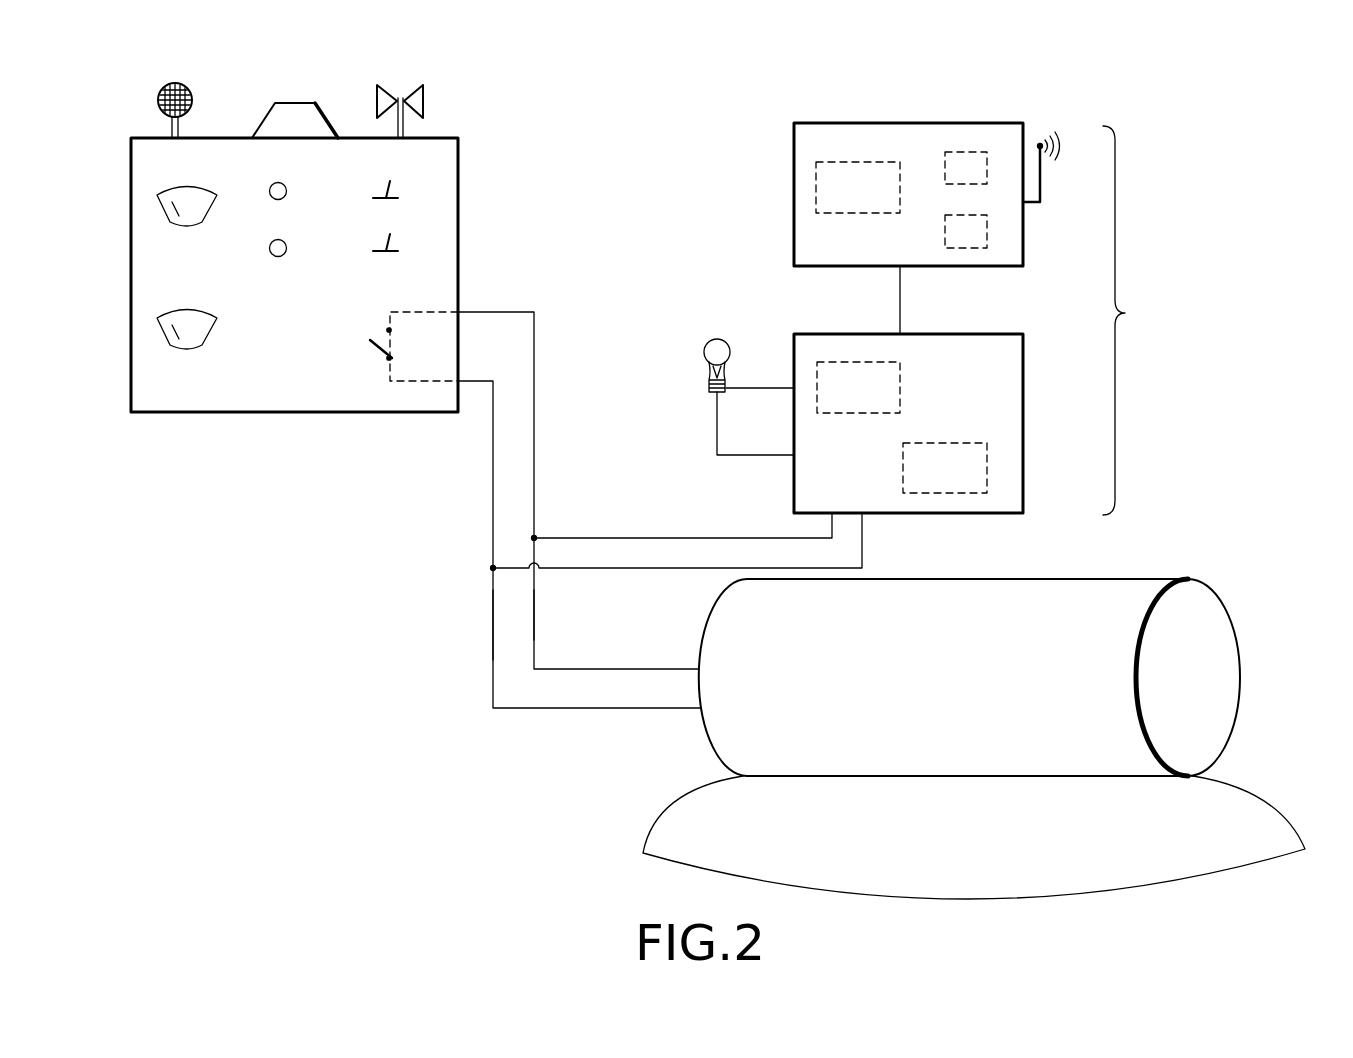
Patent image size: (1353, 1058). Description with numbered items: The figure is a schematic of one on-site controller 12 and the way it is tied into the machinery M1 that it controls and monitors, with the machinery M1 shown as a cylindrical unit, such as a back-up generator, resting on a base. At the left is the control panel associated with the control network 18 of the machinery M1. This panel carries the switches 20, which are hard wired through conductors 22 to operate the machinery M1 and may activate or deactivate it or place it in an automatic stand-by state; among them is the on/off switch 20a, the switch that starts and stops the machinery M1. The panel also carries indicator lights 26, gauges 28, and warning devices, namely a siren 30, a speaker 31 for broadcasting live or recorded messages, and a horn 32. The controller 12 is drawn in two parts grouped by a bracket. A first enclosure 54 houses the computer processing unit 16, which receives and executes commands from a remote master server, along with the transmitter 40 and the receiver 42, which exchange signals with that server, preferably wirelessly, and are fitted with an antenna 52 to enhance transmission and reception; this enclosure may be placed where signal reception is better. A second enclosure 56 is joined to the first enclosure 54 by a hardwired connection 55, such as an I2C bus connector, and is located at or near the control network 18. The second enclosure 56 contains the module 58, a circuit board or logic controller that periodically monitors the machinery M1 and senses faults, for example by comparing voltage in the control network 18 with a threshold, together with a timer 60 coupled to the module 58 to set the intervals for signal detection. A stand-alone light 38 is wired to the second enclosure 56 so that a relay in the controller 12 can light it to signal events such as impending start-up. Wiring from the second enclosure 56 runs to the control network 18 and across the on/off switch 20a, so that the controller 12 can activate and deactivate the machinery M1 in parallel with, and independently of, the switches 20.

The controller 12 is at (1139, 320).
The computer processing unit 16 is at (817, 177).
The control network 18 is at (491, 544).
The switches 20 is at (391, 191).
The on/off switch 20a is at (372, 344).
The conductors 22 is at (493, 617).
The indicator lights 26 is at (270, 186).
The gauges 28 is at (192, 222).
The siren 30 is at (262, 122).
The speaker 31 is at (158, 97).
The horn 32 is at (412, 90).
The stand-alone light 38 is at (708, 383).
The transmitter 40 is at (973, 248).
The receiver 42 is at (965, 152).
The antenna 52 is at (1041, 182).
The first enclosure 54 is at (794, 247).
The hardwired connection 55 is at (900, 310).
The second enclosure 56 is at (794, 483).
The module 58 is at (900, 380).
The timer 60 is at (903, 470).
The machinery M1 is at (1125, 578).